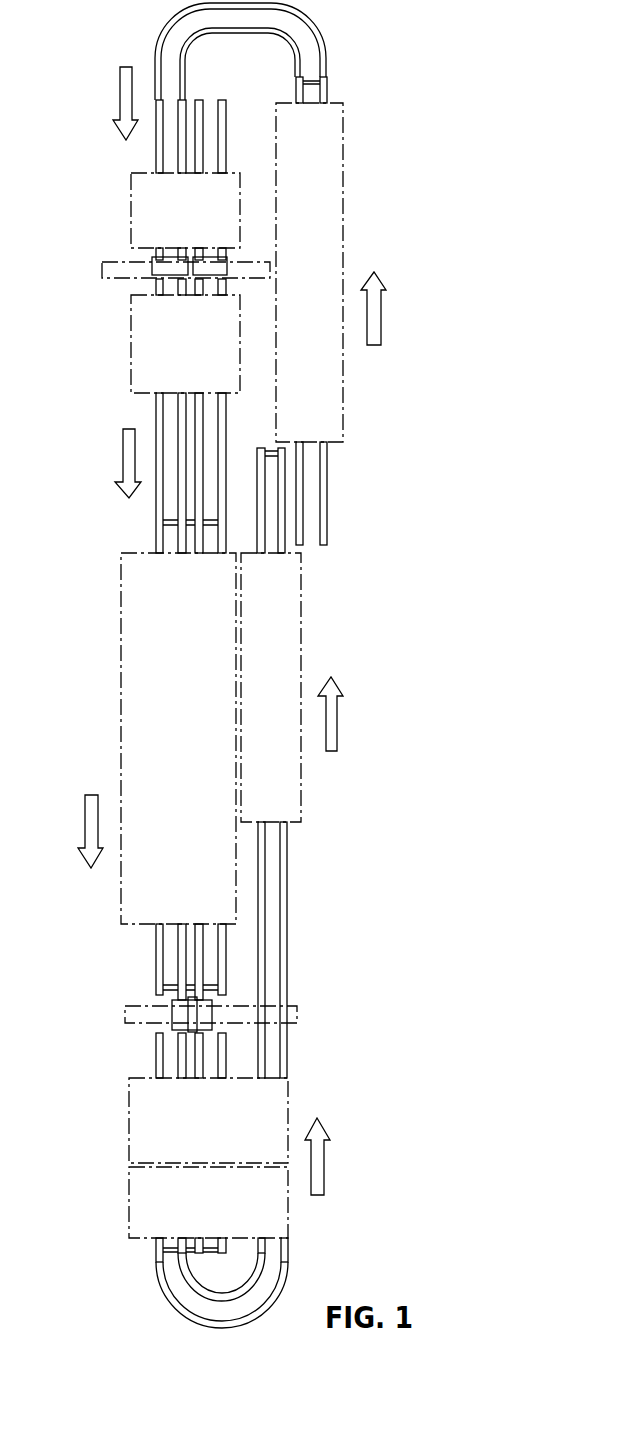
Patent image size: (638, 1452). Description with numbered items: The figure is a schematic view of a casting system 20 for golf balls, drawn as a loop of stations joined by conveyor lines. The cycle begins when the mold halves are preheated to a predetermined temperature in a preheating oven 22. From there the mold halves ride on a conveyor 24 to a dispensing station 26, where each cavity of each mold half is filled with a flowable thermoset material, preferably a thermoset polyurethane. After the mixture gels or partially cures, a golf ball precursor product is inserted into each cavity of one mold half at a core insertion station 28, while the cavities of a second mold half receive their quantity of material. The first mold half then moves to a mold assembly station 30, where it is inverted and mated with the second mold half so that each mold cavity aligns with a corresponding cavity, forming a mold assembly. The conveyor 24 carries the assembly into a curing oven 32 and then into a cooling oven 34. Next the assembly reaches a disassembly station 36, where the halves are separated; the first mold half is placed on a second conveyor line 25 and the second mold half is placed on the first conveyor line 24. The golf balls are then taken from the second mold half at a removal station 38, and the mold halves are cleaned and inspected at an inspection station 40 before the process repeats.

The casting system 20 is at (425, 518).
The preheating oven 22 is at (126, 665).
The conveyor 24 is at (160, 33).
The second conveyor line 25 is at (328, 473).
The dispensing station 26 is at (125, 1015).
The core insertion station 28 is at (130, 1103).
The mold assembly station 30 is at (130, 1190).
The curing oven 32 is at (293, 617).
The cooling oven 34 is at (328, 236).
The disassembly station 36 is at (133, 184).
The removal station 38 is at (101, 270).
The inspection station 40 is at (133, 343).